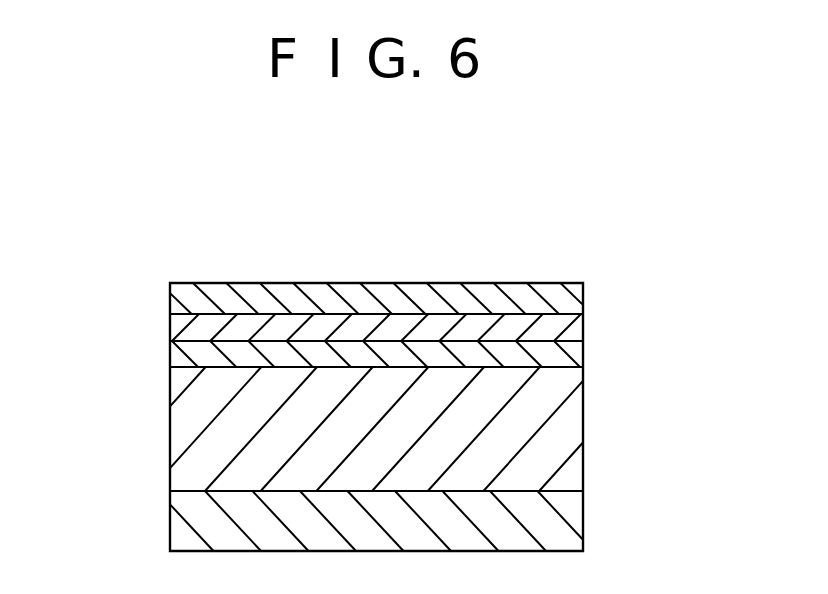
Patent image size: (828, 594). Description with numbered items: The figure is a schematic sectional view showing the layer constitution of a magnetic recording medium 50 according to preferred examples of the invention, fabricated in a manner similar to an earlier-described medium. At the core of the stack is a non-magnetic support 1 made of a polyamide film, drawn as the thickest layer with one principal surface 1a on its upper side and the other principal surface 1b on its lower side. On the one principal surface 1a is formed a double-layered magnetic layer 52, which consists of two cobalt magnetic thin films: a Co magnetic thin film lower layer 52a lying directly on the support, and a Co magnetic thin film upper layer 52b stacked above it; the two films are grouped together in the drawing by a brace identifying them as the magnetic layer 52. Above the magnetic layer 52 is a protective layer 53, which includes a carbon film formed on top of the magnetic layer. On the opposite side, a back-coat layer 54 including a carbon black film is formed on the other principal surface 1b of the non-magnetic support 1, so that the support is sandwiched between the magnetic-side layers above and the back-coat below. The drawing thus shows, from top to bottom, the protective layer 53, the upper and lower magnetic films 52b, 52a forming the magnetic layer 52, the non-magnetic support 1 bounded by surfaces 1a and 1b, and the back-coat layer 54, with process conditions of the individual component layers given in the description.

The semiconductor device / laminated structure 50 is at (488, 252).
The protective layer 53 is at (557, 300).
The double-layered magnetic layer 52 is at (590, 315).
The Co magnetic thin film (upper layer) 52b is at (176, 333).
The Co magnetic thin film (lower layer) 52a is at (176, 358).
The non-magnetic support 1 is at (570, 430).
The one principal surface 1a is at (170, 368).
The other principal surface 1b is at (172, 493).
The back-coat layer 54 is at (550, 519).